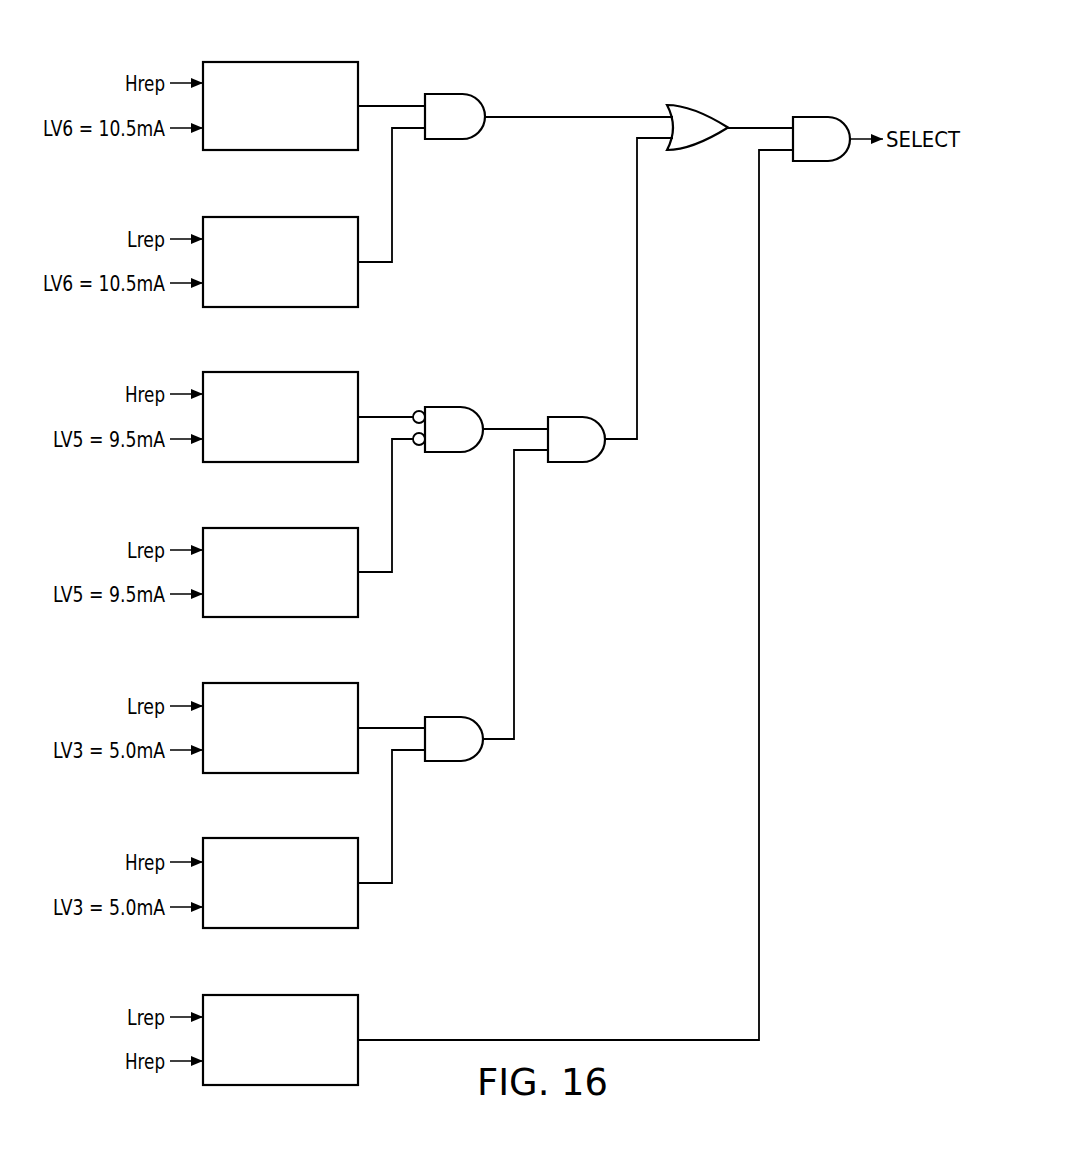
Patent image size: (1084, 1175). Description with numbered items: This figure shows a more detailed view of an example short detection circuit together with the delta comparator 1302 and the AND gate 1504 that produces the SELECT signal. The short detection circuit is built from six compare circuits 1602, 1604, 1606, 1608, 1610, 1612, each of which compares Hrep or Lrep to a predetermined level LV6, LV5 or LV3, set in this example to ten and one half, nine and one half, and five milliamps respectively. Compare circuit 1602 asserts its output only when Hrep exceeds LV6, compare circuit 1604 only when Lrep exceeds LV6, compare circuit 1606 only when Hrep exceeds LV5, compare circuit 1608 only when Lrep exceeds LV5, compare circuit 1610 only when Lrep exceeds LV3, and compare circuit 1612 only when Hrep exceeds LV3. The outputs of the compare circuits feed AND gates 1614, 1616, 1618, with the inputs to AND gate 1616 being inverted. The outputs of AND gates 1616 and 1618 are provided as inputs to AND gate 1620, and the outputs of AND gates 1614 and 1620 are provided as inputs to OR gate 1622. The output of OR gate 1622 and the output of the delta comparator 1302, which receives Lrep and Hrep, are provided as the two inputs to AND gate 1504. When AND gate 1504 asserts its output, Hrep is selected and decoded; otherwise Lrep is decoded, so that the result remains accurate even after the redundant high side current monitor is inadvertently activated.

The compare circuit 1602 is at (281, 62).
The compare circuit 1604 is at (281, 217).
The compare circuit 1606 is at (281, 372).
The compare circuit 1608 is at (280, 617).
The compare circuit 1610 is at (280, 773).
The compare circuit 1612 is at (280, 928).
The delta comparator 1302 is at (280, 1085).
The AND gate 1614 is at (453, 94).
The AND gate 1616 is at (453, 407).
The AND gate 1618 is at (455, 761).
The AND gate 1620 is at (575, 417).
The OR gate 1622 is at (702, 105).
The AND gate 1504 is at (820, 117).